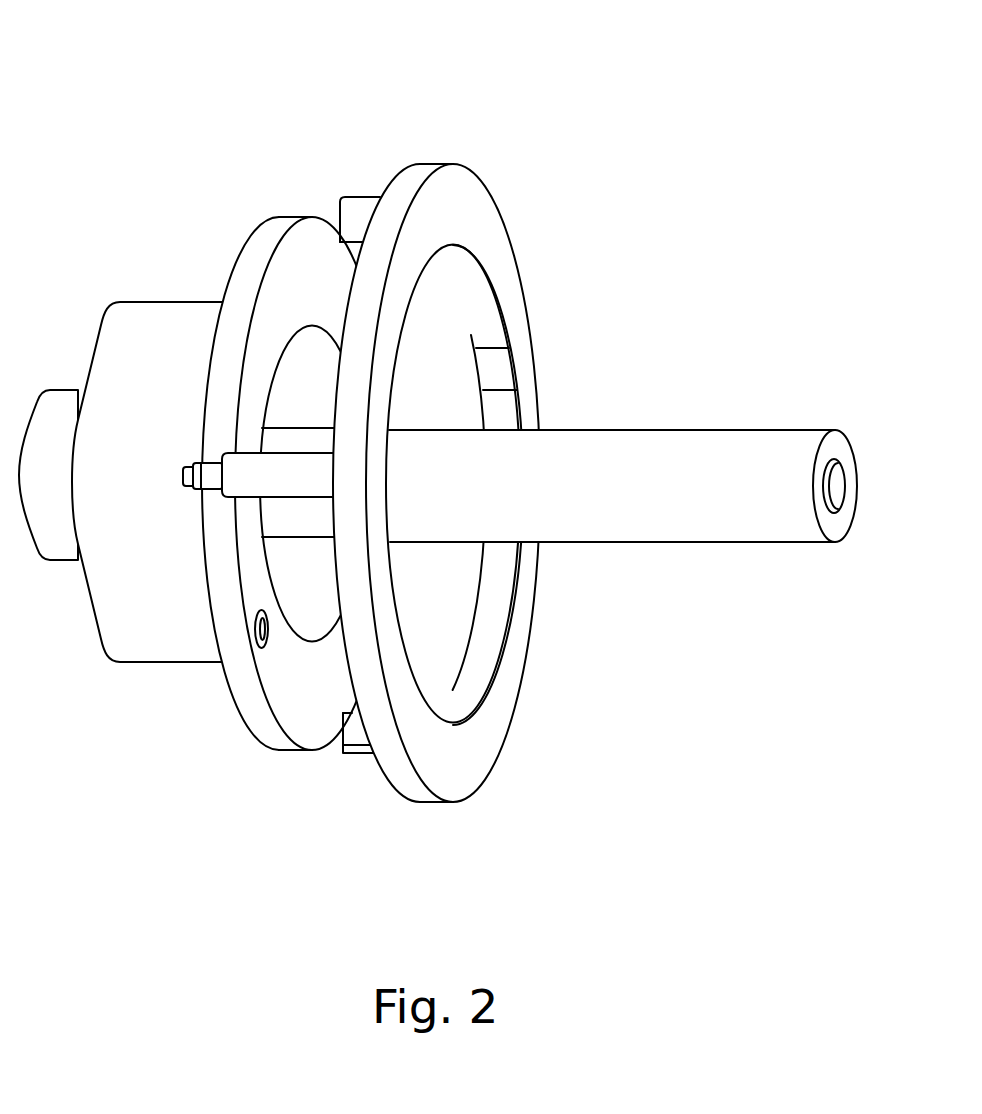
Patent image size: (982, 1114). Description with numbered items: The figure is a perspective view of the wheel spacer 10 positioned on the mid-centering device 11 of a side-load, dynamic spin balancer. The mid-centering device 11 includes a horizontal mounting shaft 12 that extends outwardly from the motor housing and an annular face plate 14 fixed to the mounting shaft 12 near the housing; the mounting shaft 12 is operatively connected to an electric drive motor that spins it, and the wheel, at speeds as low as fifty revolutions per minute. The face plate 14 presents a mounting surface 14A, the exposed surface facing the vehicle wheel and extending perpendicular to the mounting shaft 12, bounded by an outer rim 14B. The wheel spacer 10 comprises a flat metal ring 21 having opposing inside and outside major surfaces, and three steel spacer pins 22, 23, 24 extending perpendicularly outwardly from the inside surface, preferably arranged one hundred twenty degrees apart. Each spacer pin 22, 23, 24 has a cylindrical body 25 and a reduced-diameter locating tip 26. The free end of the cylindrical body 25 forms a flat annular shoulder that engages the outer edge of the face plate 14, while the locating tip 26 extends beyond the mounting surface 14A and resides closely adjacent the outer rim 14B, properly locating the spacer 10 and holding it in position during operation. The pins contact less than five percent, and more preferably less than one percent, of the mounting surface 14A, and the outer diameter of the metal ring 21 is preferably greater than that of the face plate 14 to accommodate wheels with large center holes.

The wheel spacer 10 is at (438, 446).
The mid-centering device 11 is at (131, 265).
The mounting shaft 12 is at (622, 518).
The face plate 14 is at (249, 418).
The mounting surface 14A is at (300, 273).
The outer rim 14B is at (237, 667).
The metal ring 21 is at (488, 243).
The spacer pin 22 is at (372, 158).
The spacer pin 23 is at (286, 515).
The spacer pin 24 is at (367, 777).
The cylindrical body 25 is at (350, 198).
The locating tip 26 is at (208, 466).